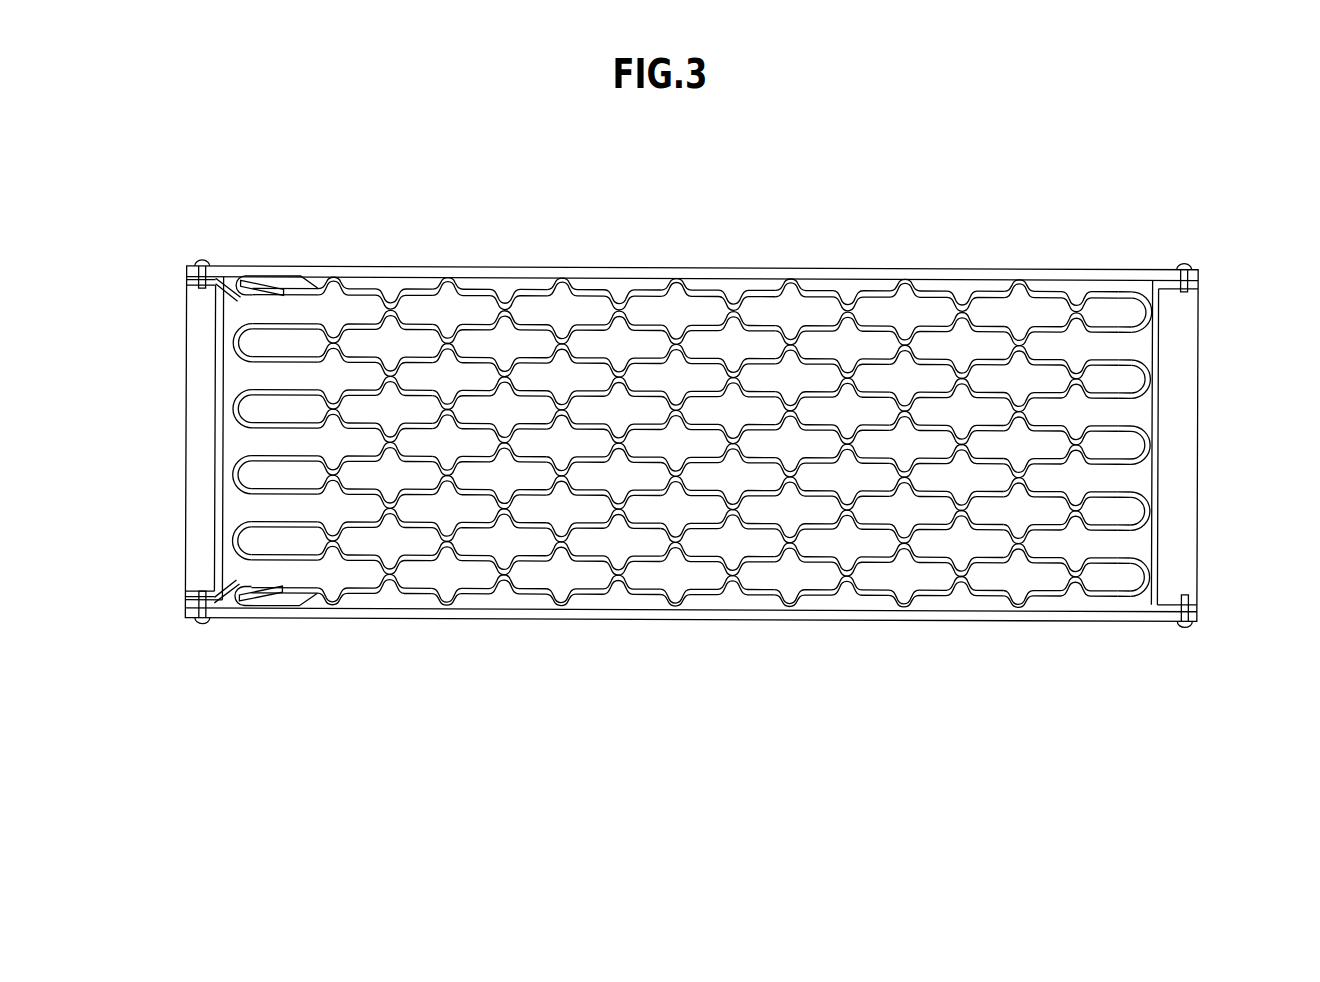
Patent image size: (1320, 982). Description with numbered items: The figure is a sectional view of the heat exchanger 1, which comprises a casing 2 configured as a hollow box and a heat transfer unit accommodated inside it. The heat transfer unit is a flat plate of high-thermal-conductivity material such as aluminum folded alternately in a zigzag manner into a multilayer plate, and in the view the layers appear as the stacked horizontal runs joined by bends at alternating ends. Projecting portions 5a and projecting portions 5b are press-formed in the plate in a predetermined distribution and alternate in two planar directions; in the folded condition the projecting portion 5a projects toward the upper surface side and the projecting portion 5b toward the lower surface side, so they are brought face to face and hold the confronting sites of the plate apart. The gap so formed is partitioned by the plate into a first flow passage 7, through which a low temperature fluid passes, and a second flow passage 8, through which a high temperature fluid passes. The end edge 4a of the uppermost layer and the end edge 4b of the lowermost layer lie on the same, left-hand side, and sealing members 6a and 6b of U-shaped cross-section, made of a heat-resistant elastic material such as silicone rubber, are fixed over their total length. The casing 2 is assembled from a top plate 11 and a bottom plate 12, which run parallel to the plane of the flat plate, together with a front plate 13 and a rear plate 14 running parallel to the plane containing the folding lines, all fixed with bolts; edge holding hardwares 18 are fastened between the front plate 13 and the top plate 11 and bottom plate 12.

The heat exchanger 1 is at (392, 92).
The casing 2 is at (1140, 264).
The end edge 4a is at (282, 295).
The end edge 4b is at (289, 609).
The projecting portion 5a is at (1018, 297).
The projecting portion 5b is at (972, 297).
The sealing member 6a is at (240, 290).
The sealing member 6b is at (249, 622).
The first flow passage 7 is at (525, 345).
The second flow passage 8 is at (333, 319).
The top plate 11 is at (829, 275).
The bottom plate 12 is at (746, 622).
The front plate 13 is at (215, 392).
The rear plate 14 is at (1158, 353).
The edge holding hardware 18 is at (213, 292).